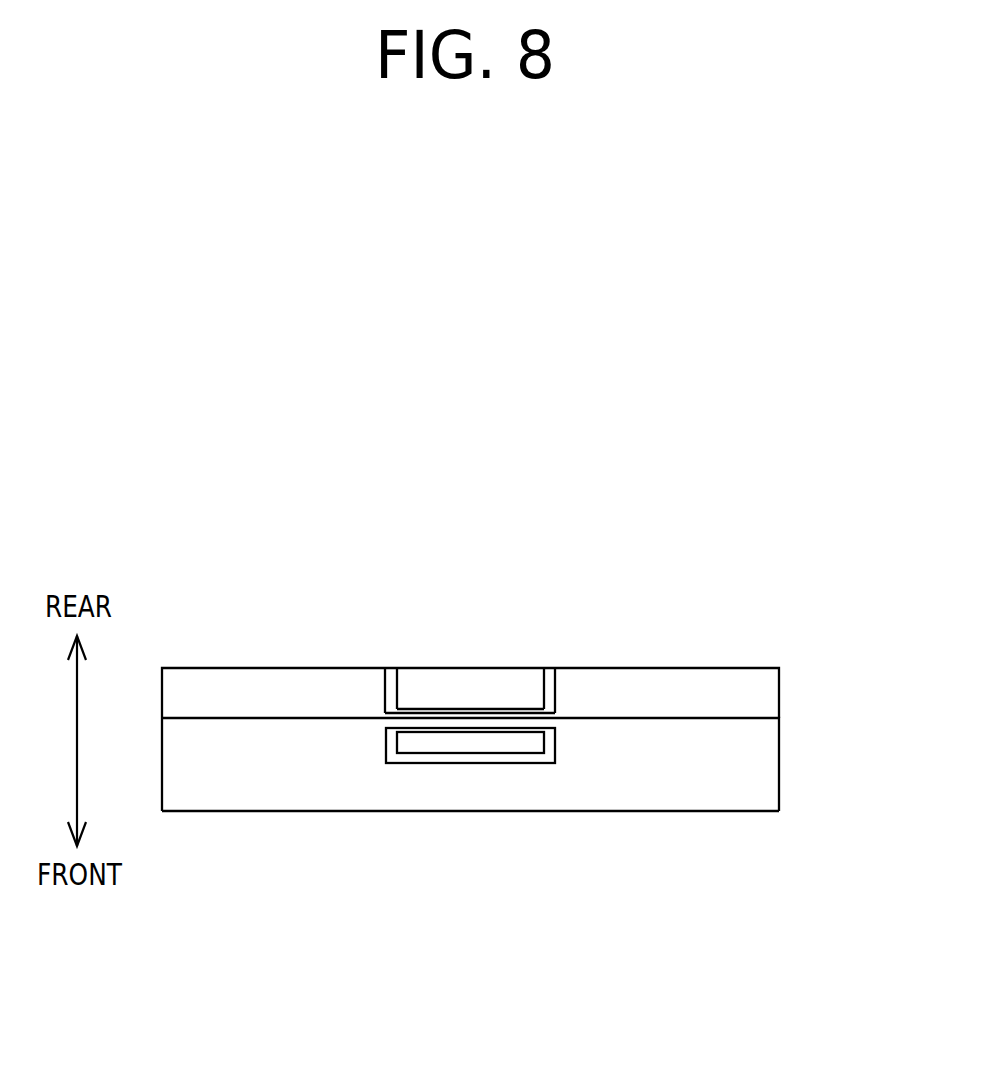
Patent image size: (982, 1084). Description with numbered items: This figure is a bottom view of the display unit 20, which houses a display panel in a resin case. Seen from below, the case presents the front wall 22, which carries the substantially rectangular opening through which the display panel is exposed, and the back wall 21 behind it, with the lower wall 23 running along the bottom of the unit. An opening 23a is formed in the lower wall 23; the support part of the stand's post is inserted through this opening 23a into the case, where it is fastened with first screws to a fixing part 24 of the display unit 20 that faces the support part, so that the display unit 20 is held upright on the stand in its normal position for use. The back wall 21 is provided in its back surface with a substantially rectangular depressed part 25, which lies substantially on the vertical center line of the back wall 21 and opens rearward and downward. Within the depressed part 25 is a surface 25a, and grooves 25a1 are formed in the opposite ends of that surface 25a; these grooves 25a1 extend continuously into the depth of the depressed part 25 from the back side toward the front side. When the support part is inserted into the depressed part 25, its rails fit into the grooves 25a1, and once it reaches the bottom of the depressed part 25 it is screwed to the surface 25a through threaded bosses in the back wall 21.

The display unit 20 is at (748, 575).
The back wall 21 is at (708, 813).
The front wall 22 is at (223, 665).
The lower wall 23 is at (742, 752).
The opening 23a is at (492, 765).
The fixing part 24 is at (430, 745).
The depressed part 25 is at (492, 668).
The surface 25a is at (447, 683).
The grooves 25a1 is at (390, 667).